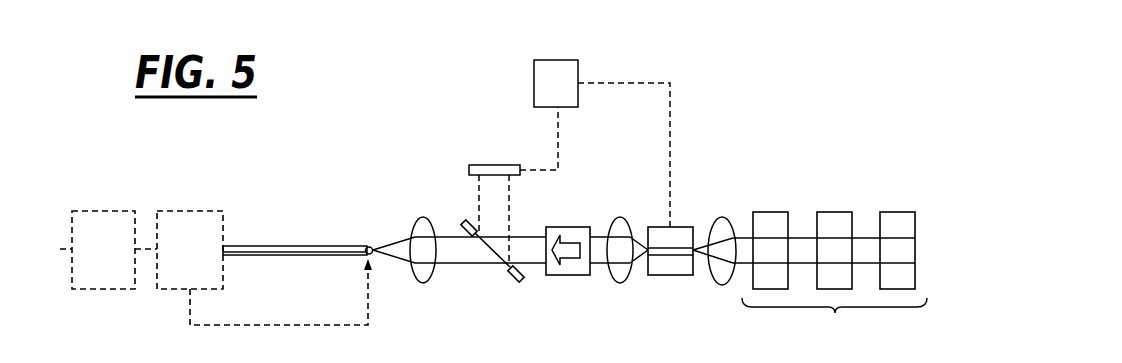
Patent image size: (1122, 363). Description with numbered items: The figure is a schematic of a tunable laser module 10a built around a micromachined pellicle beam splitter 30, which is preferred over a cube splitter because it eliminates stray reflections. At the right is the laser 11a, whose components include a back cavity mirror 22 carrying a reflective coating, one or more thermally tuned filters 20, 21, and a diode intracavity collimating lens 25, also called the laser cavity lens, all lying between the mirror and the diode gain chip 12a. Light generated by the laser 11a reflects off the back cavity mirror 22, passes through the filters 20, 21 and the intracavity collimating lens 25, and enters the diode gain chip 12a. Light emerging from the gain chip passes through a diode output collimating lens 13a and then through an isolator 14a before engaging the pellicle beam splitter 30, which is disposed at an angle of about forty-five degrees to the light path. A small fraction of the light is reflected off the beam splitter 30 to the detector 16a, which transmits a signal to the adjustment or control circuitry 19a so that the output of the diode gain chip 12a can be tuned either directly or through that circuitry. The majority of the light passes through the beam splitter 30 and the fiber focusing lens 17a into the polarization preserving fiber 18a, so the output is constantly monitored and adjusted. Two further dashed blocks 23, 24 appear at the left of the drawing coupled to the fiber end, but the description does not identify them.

The tunable laser module 10a is at (438, 118).
The laser 11a is at (834, 320).
The diode gain chip 12a is at (680, 227).
The diode output collimating lens 13a is at (628, 218).
The isolator 14a is at (567, 227).
The detector 16a is at (488, 165).
The fiber focusing lens 17a is at (437, 218).
The polarization preserving fiber 18a is at (253, 246).
The adjustment circuitry 19a is at (558, 60).
The thermally tuned filter 20 is at (767, 212).
The thermally tuned filter 21 is at (833, 212).
The back cavity mirror 22 is at (895, 212).
The semiconductor laser 23 is at (173, 211).
The drive power supply 24 is at (105, 211).
The diode intracavity collimating lens 25 is at (725, 285).
The pellicle beam splitter 30 is at (481, 257).